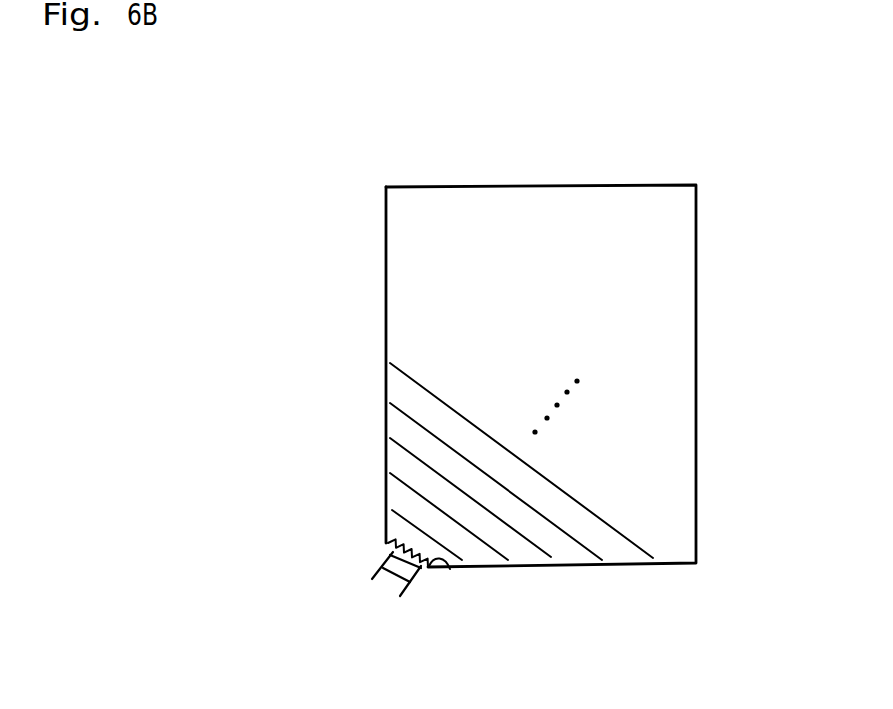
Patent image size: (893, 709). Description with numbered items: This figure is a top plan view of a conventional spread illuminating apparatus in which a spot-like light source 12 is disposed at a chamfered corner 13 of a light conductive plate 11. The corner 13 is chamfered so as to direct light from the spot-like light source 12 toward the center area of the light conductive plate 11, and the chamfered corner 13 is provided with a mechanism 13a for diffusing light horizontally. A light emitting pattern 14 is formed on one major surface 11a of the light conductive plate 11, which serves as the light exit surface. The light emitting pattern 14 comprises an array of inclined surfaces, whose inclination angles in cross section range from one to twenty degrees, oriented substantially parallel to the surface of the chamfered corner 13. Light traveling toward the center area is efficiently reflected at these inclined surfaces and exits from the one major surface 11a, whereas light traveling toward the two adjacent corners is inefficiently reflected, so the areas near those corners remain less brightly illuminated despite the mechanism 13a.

The light conductive plate 11 is at (643, 293).
The one major surface 11a is at (447, 303).
The spot-like light source 12 is at (384, 559).
The chamfered corner 13 is at (400, 538).
The mechanism for diffusing light horizontally 13a is at (447, 570).
The light emitting pattern 14 is at (592, 512).